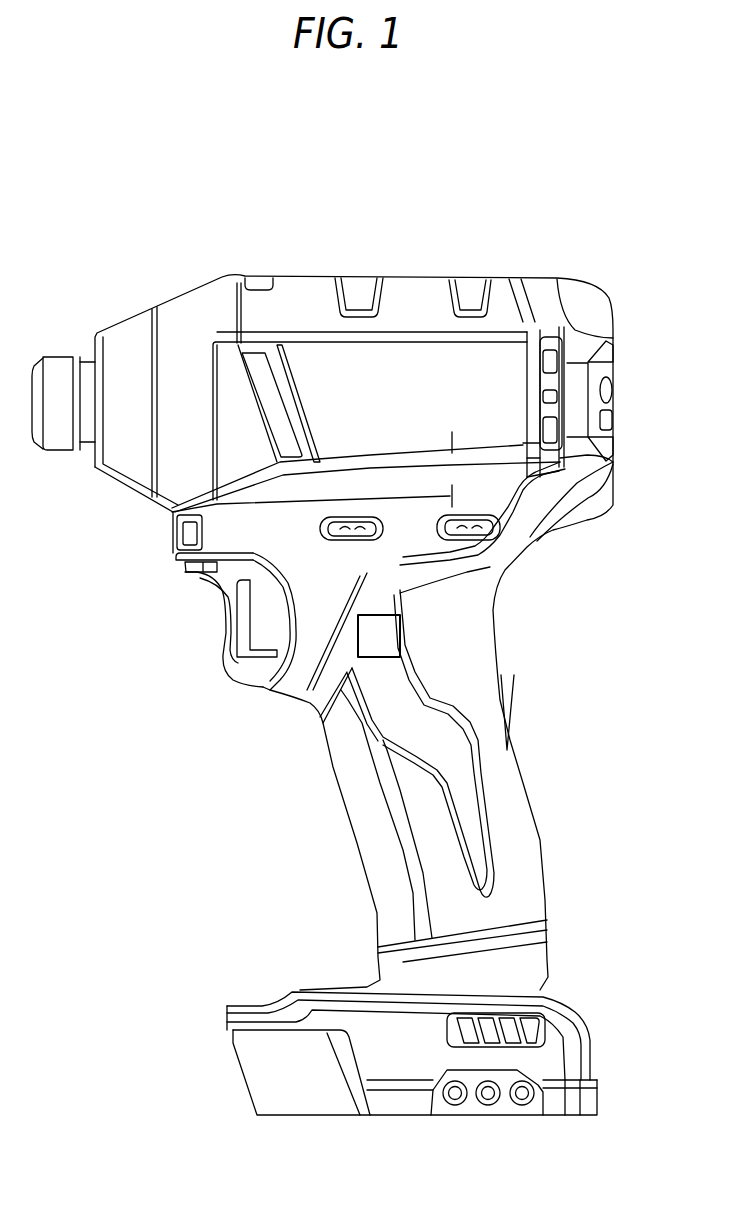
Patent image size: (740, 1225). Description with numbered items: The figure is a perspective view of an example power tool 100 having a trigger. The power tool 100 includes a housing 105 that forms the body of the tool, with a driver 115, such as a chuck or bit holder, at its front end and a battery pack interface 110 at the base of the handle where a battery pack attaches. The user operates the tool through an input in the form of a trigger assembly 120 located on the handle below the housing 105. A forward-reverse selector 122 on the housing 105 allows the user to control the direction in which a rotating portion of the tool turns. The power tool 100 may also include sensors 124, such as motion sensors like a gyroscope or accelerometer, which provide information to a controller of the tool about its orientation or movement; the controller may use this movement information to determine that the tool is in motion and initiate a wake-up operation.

The power tool 100 is at (645, 301).
The housing 105 is at (532, 543).
The battery pack interface 110 is at (233, 1043).
The driver 115 is at (43, 357).
The trigger assembly 120 is at (183, 646).
The forward-reverse selector 122 is at (320, 537).
The sensors 124 is at (401, 651).